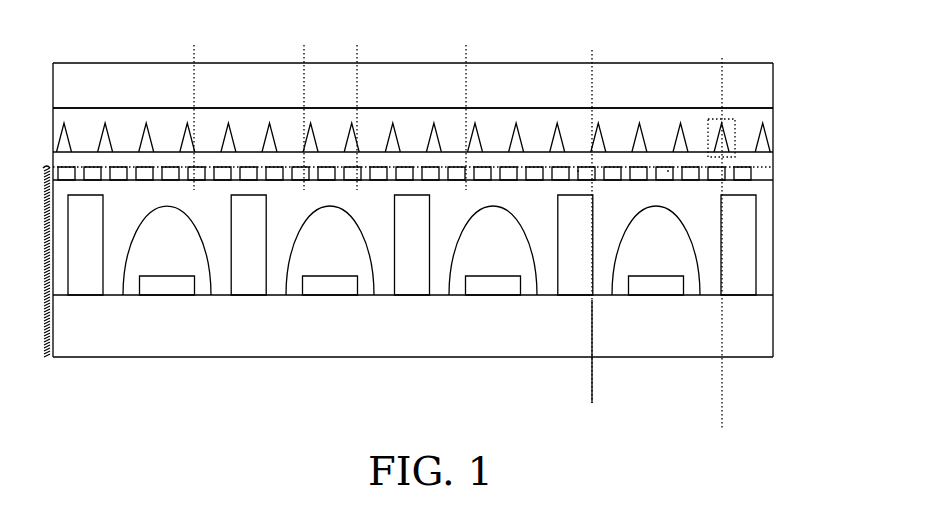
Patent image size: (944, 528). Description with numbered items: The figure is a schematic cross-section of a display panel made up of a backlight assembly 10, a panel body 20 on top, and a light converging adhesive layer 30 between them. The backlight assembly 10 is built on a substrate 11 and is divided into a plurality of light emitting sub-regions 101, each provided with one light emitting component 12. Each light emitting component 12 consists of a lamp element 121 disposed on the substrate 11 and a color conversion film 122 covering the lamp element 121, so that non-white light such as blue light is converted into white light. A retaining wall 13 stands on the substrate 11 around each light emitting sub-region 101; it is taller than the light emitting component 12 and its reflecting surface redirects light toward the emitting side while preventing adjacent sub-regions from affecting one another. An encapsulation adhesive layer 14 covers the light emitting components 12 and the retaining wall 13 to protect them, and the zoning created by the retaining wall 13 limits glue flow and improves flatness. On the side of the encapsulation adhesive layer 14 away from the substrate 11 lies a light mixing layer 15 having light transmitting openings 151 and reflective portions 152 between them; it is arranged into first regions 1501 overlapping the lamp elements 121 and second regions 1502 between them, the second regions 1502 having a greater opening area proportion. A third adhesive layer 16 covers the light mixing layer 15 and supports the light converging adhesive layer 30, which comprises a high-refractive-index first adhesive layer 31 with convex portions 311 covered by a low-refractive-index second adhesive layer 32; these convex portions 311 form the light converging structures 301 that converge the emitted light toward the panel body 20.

The backlight assembly 10 is at (42, 260).
The light emitting sub-region 101 is at (662, 387).
The substrate 11 is at (775, 326).
The light emitting component 12 is at (510, 251).
The lamp element 121 is at (673, 287).
The color conversion film 122 is at (682, 256).
The retaining wall 13 is at (741, 222).
The encapsulation adhesive layer 14 is at (764, 189).
The light mixing layer 15 is at (448, 99).
The first region 1501 is at (327, 50).
The second region 1502 is at (231, 50).
The light transmitting opening 151 is at (578, 170).
The reflective portion 152 is at (668, 172).
The third adhesive layer 16 is at (773, 163).
The panel body 20 is at (773, 86).
The light converging adhesive layer 30 is at (468, 95).
The light converging structure 301 is at (730, 119).
The first adhesive layer 31 is at (457, 125).
The convex portion 311 is at (766, 146).
The second adhesive layer 32 is at (773, 110).